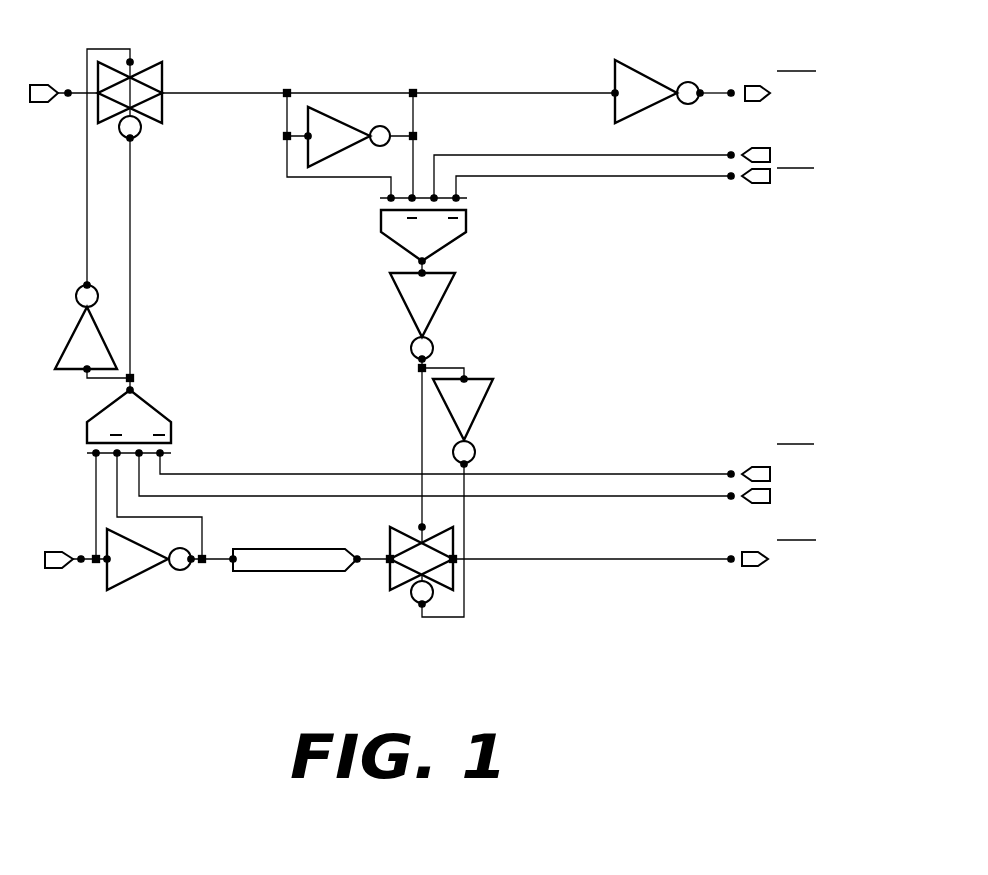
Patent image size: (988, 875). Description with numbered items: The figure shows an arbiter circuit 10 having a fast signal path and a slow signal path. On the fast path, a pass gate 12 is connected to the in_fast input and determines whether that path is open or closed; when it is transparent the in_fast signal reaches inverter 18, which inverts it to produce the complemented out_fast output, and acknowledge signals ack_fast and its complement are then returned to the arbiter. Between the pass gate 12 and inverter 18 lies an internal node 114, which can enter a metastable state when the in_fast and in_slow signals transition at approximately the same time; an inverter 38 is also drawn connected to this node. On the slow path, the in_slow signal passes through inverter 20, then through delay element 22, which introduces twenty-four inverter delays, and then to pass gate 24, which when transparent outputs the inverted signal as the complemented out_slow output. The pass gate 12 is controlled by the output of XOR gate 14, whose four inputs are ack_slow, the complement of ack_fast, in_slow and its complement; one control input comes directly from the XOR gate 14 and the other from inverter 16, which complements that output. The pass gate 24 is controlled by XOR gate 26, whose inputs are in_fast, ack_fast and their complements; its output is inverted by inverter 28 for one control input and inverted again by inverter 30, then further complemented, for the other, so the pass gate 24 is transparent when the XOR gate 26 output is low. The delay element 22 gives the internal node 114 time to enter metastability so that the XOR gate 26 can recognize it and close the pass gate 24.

The arbiter circuit 10 is at (226, 653).
The pass gate 12 is at (163, 118).
The XOR gate 14 is at (145, 413).
The inverter 16 is at (82, 335).
The inverter 18 is at (632, 77).
The inverter 20 is at (133, 568).
The delay element 22 is at (278, 555).
The pass gate 24 is at (393, 580).
The XOR gate 26 is at (448, 235).
The inverter 28 is at (433, 298).
The inverter 30 is at (478, 402).
The inverter 38 is at (327, 130).
The internal node 114 is at (487, 93).